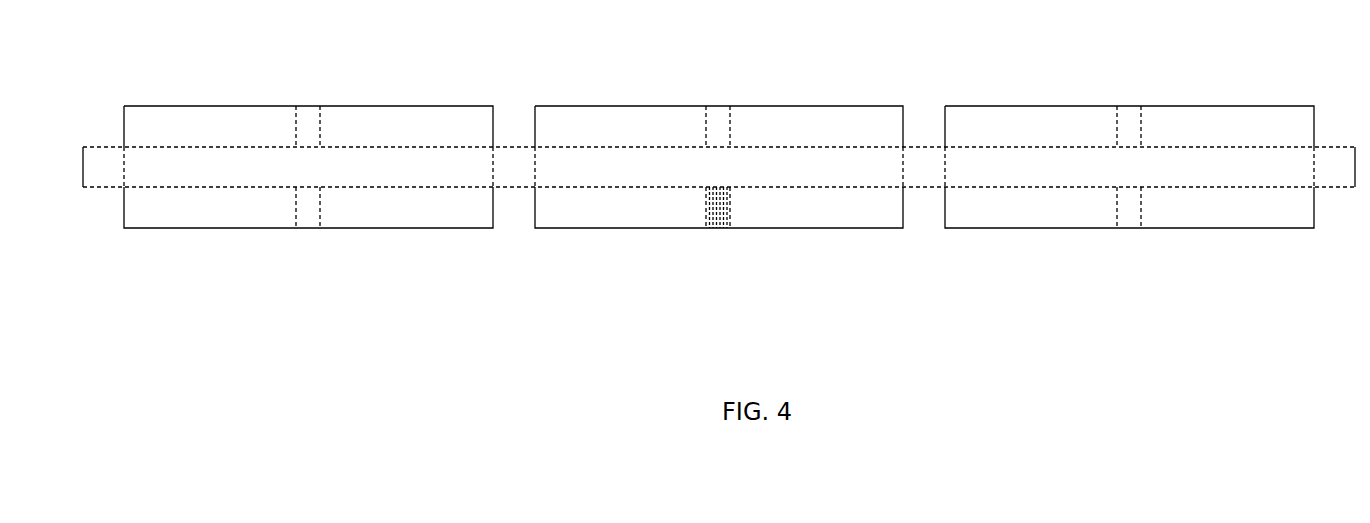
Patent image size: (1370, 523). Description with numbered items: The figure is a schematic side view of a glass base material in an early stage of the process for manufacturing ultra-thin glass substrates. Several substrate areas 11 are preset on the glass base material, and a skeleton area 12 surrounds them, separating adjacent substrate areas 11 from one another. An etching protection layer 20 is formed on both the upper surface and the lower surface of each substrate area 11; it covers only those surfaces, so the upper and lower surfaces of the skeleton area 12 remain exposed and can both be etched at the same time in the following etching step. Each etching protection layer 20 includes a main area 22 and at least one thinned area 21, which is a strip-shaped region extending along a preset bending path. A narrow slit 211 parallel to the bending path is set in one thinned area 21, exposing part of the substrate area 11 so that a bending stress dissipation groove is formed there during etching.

The substrate area 11 is at (719, 167).
The skeleton area 12 is at (1336, 165).
The etching protection layer 20 is at (971, 104).
The thinned area 21 is at (713, 215).
The main area 22 is at (607, 167).
The narrow slit 211 is at (706, 222).